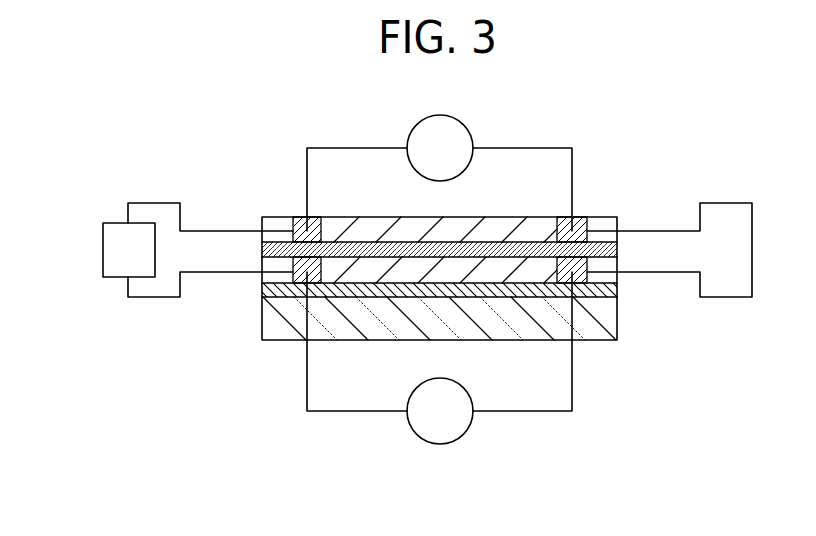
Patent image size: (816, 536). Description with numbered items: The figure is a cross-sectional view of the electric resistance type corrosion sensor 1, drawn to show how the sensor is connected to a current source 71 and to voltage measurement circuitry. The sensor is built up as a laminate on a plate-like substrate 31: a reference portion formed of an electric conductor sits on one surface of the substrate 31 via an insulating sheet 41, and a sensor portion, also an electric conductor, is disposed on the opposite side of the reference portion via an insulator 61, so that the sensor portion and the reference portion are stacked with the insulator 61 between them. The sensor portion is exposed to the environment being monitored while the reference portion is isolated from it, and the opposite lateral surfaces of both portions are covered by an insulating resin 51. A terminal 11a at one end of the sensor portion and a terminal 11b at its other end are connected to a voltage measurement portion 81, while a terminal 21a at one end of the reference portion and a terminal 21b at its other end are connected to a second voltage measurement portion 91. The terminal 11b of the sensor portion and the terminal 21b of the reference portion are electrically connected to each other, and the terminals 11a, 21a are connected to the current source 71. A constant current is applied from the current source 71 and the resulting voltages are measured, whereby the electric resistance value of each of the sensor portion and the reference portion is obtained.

The electric resistance type corrosion sensor 1 is at (664, 166).
The terminal 11a is at (303, 220).
The terminal 11b is at (577, 225).
The terminal 21a is at (299, 274).
The terminal 21b is at (588, 274).
The substrate 31 is at (591, 334).
The insulating sheet 41 is at (263, 290).
The insulating resin 51 is at (355, 270).
The insulator 61 is at (510, 250).
The current source 71 is at (102, 258).
The voltage measurement portion 81 is at (462, 121).
The voltage measurement portion 91 is at (467, 437).